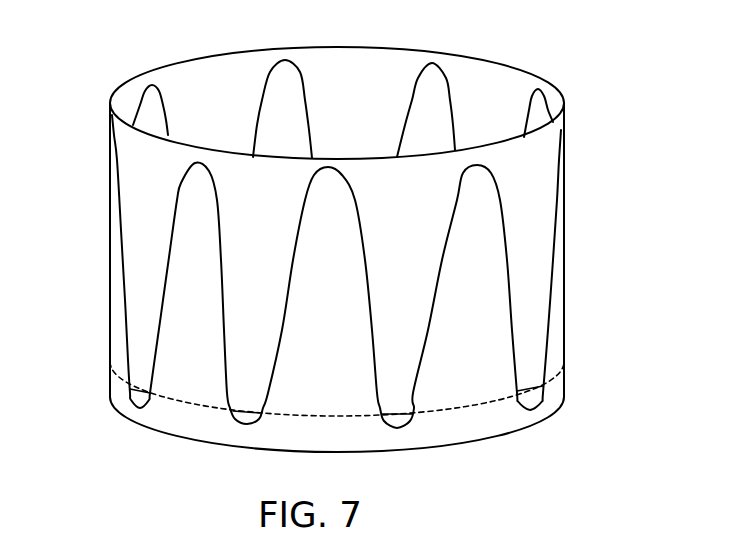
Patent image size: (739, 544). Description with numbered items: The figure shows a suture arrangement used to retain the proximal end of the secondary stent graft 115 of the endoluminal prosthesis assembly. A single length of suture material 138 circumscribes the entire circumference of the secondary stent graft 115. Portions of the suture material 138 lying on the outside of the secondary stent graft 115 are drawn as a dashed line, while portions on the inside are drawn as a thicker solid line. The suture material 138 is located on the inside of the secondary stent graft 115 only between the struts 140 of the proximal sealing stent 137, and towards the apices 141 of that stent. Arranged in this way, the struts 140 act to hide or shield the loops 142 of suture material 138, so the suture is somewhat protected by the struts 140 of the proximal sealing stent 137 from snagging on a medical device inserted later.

The secondary stent graft 115 is at (133, 173).
The proximal sealing stent 137 is at (450, 97).
The suture material 138 is at (187, 402).
The struts 140 is at (508, 300).
The apices 141 is at (398, 428).
The loops 142 is at (240, 420).